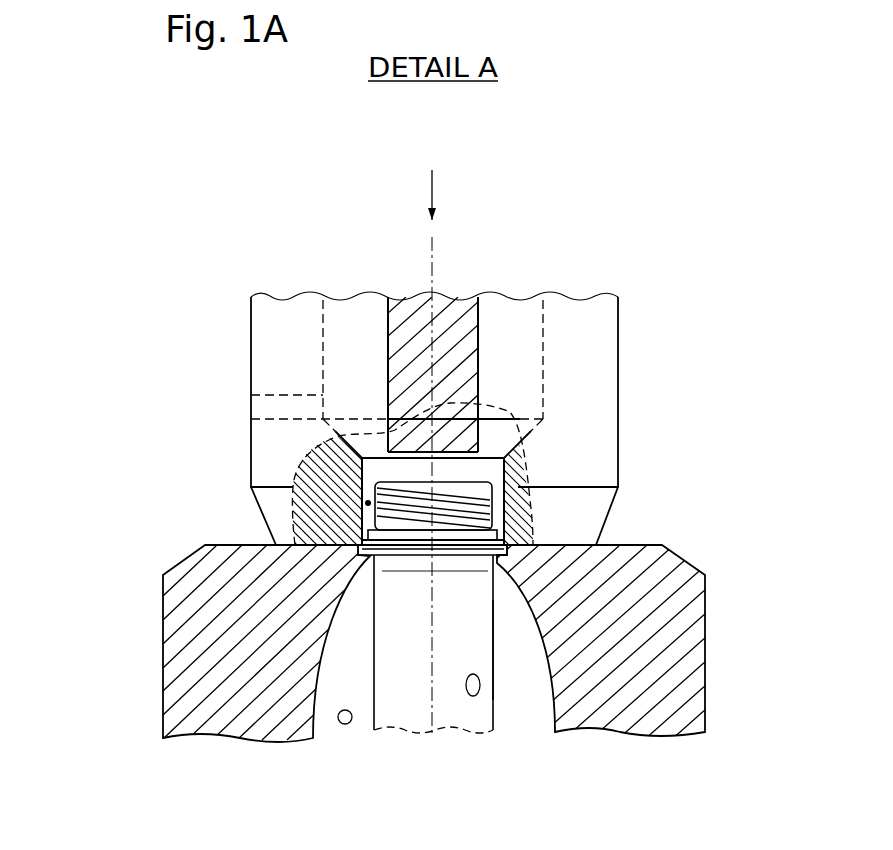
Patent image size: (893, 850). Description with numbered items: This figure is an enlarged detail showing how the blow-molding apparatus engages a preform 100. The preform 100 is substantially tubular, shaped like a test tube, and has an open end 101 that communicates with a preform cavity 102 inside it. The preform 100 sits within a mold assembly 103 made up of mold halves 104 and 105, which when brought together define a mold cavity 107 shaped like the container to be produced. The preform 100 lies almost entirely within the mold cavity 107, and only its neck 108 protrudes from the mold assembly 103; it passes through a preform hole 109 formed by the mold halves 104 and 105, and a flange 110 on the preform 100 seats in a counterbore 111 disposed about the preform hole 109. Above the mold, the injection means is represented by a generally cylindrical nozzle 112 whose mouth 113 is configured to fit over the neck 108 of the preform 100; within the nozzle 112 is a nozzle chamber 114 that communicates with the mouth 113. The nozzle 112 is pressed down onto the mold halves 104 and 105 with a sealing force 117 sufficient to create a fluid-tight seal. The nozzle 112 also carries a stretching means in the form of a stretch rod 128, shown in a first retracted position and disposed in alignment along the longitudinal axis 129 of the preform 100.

The preform 100 is at (503, 711).
The open end 101 is at (471, 475).
The preform cavity 102 is at (474, 696).
The mold assembly 103 is at (101, 545).
The mold half 104 is at (161, 713).
The mold half 105 is at (707, 623).
The mold cavity 107 is at (347, 725).
The neck 108 is at (506, 495).
The preform hole 109 is at (490, 557).
The flange 110 is at (505, 536).
The counterbore 111 is at (514, 559).
The nozzle 112 is at (600, 309).
The mouth 113 is at (368, 503).
The nozzle chamber 114 is at (548, 340).
The sealing force 117 is at (435, 180).
The stretch rod 128 is at (489, 323).
The longitudinal axis 129 is at (433, 247).